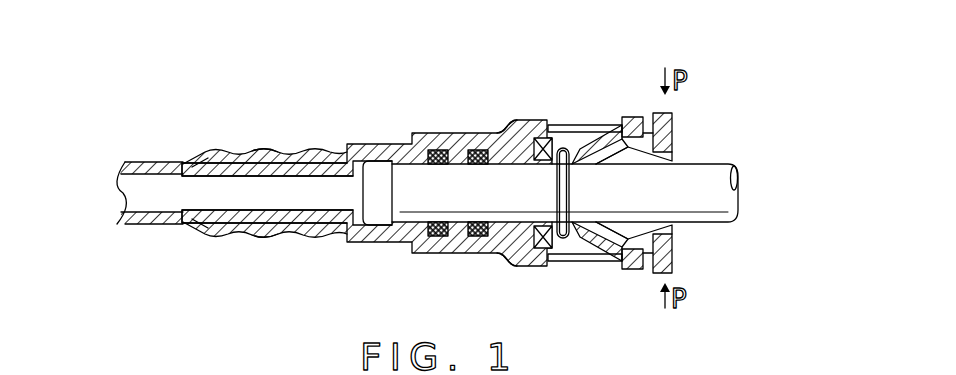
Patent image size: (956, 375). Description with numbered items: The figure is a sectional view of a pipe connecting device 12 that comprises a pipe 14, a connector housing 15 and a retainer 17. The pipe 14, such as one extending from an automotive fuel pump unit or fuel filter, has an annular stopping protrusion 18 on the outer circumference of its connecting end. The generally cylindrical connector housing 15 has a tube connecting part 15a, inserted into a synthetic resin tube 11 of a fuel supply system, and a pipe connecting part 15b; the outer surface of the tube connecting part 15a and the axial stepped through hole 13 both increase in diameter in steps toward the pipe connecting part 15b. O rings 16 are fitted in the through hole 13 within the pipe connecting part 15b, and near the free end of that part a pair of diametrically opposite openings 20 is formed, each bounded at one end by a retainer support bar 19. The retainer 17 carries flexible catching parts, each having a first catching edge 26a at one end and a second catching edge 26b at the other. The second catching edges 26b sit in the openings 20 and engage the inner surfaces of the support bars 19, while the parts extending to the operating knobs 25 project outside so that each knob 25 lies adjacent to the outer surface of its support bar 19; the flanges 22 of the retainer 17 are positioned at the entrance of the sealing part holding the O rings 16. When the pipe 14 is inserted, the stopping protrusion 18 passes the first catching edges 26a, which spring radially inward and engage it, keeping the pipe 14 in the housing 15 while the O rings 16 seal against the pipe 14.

The synthetic resin tube 11 is at (158, 162).
The pipe connecting device 12 is at (479, 110).
The stepped through hole 13 is at (345, 238).
The pipe 14 is at (410, 206).
The connector housing 15 is at (380, 150).
The tube connecting part 15a is at (267, 240).
The pipe connecting part 15b is at (508, 242).
The O ring 16 is at (432, 150).
The retainer 17 is at (615, 232).
The stopping protrusion 18 is at (562, 148).
The retainer support bar 19 is at (640, 118).
The opening 20 is at (594, 125).
The flange 22 is at (546, 137).
The operating knob 25 is at (676, 118).
The first catching edge 26a is at (577, 150).
The second catching edge 26b is at (612, 130).